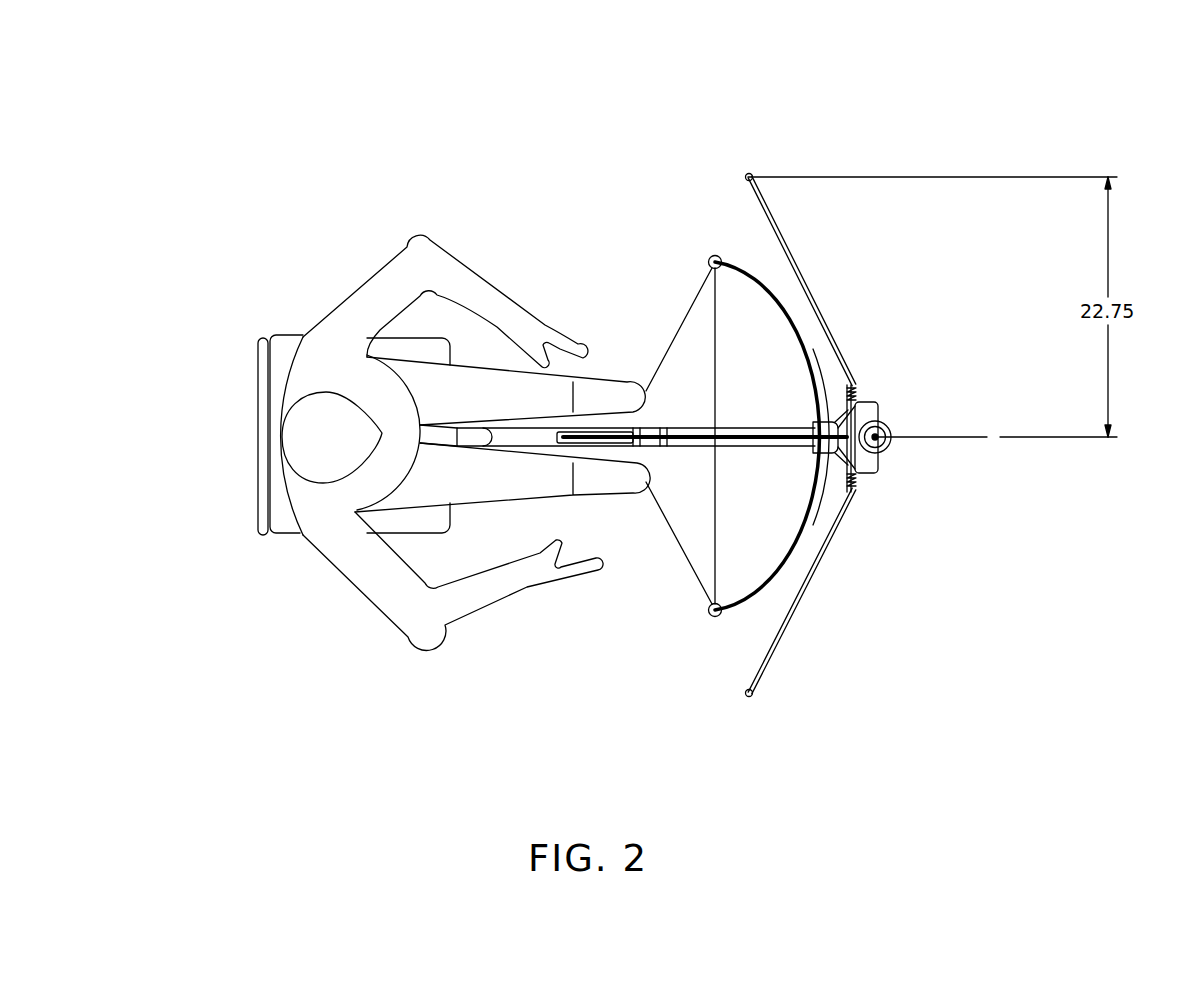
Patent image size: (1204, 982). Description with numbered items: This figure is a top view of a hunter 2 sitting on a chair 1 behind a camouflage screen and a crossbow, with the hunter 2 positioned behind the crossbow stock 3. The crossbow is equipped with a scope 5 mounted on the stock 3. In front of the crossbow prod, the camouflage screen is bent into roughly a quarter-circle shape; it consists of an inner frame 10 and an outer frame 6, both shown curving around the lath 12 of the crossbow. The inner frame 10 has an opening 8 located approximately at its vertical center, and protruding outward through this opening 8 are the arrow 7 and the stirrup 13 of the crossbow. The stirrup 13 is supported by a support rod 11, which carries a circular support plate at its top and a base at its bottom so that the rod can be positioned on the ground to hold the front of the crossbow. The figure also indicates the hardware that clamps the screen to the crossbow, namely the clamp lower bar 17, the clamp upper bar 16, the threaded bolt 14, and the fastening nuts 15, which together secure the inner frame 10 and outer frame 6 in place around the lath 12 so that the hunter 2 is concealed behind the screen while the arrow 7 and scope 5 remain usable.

The chair 1 is at (263, 385).
The hunter 2 is at (338, 303).
The crossbow stock 3 is at (520, 431).
The scope 5 is at (605, 430).
The outer frame 6 is at (748, 177).
The arrow 7 is at (877, 460).
The opening 8 is at (860, 405).
The inner frame 10 is at (848, 387).
The support rod 11 is at (880, 442).
The lath 12 is at (750, 592).
The stirrup 13 is at (857, 477).
The threaded bolt 14 is at (997, 567).
The fastening nuts 15 is at (853, 483).
The clamp upper bar 16 is at (853, 398).
The clamp lower bar 17 is at (860, 467).